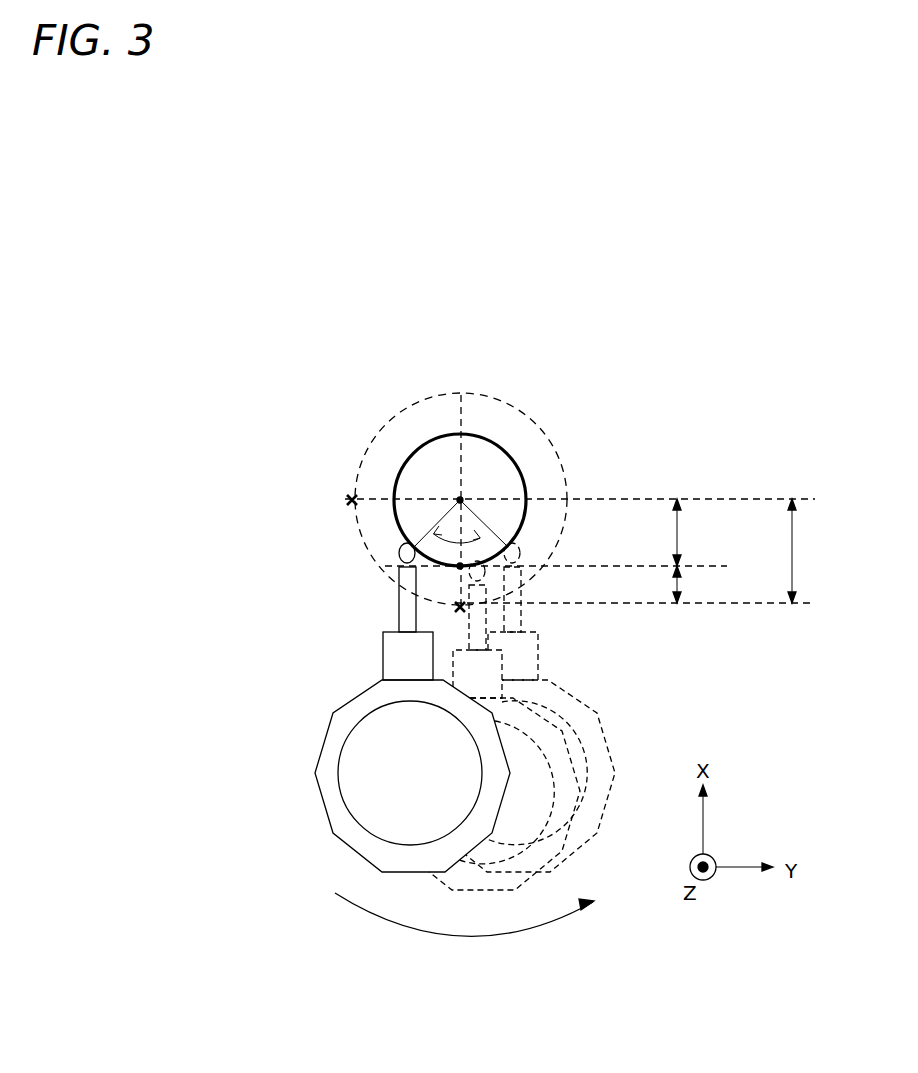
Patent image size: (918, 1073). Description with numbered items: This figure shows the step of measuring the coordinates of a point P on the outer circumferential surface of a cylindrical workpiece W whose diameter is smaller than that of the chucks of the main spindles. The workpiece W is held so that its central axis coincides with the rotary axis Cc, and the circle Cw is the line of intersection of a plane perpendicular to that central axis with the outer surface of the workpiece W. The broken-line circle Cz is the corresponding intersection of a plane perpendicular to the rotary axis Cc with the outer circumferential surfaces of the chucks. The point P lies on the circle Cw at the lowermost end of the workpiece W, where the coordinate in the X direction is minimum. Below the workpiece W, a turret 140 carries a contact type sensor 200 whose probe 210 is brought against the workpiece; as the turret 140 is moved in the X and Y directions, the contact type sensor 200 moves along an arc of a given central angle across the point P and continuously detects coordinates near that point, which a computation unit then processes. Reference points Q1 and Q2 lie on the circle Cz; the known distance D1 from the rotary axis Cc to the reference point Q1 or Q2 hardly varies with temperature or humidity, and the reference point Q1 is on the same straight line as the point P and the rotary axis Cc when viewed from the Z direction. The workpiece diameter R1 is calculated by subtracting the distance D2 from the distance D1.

The turret 140 is at (390, 775).
The contact type sensor 200 is at (405, 593).
The probe 210 is at (400, 555).
The cylindrical workpiece w is at (426, 467).
The circle Cw is at (485, 438).
The circle Cz is at (545, 434).
The rotary axis Cc is at (461, 498).
The point P is at (462, 569).
The reference point Q1 is at (463, 612).
The reference point Q2 is at (333, 502).
The workpiece diameter R1 is at (660, 532).
The distance D1 is at (779, 551).
The distance D2 is at (658, 584).